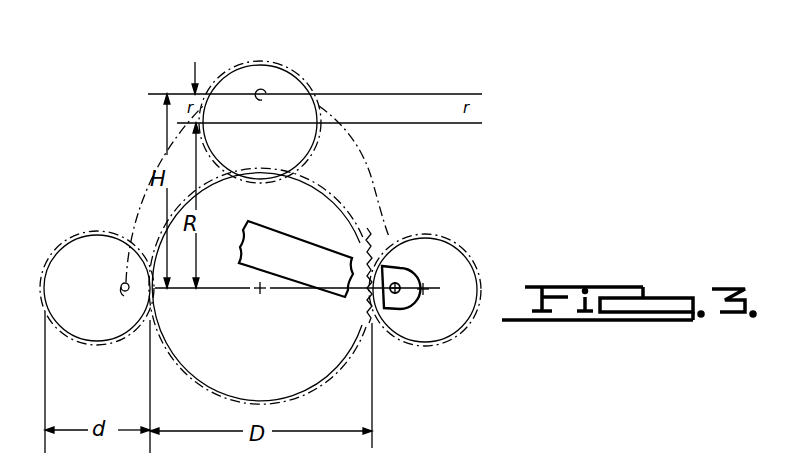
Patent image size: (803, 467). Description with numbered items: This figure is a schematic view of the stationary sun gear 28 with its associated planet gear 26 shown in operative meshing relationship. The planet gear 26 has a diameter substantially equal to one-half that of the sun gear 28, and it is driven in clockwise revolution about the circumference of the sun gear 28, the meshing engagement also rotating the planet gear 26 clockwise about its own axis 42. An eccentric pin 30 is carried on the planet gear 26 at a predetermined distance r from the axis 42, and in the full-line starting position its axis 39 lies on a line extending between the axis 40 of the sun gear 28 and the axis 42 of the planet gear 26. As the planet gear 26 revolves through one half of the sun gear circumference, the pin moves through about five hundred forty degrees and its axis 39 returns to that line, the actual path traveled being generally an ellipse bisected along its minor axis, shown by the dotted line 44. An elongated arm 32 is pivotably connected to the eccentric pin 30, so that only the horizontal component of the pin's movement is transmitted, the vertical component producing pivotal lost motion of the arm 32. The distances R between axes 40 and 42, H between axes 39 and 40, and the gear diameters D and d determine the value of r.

The planet gear 26 is at (316, 90).
The stationary sun gear 28 is at (218, 362).
The eccentric pin 30 is at (266, 88).
The elongated arm 32 is at (306, 273).
The axis of eccentric pin 39 is at (393, 300).
The axis of sun gear 40 is at (257, 291).
The axis of planet gear 42 is at (426, 287).
The dotted line 44 is at (373, 183).